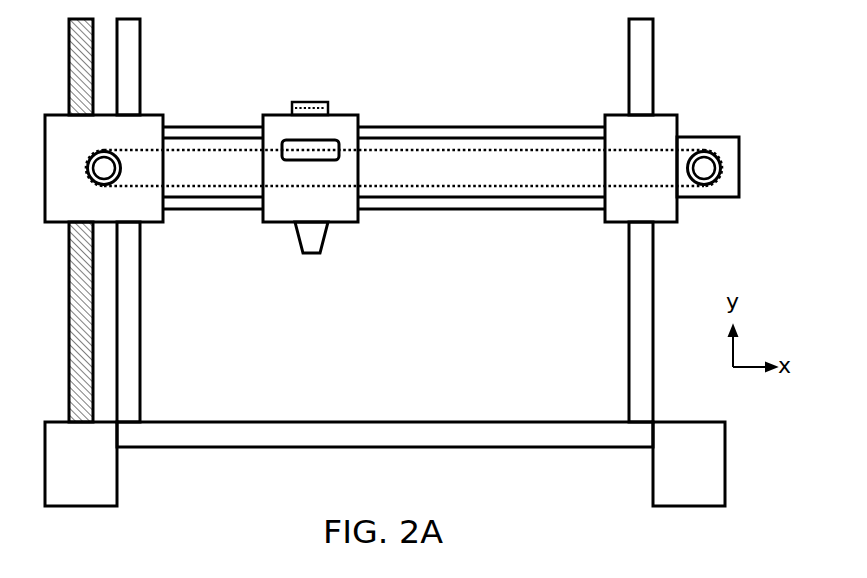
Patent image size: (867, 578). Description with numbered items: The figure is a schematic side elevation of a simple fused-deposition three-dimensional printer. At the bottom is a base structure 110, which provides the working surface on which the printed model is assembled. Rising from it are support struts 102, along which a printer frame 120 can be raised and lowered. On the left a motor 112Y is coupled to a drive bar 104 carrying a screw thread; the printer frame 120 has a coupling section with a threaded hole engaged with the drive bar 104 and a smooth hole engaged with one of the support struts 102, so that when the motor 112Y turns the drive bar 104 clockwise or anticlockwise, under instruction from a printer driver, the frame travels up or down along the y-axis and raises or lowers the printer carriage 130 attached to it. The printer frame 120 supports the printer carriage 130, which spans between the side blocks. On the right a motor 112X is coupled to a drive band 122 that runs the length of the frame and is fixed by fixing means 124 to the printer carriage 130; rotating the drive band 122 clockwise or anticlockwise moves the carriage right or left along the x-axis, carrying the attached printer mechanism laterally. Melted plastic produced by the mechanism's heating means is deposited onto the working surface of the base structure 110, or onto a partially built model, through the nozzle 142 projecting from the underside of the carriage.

The support struts 102 is at (385, 220).
The drive bar 104 is at (53, 220).
The base structure 110 is at (247, 422).
The motor 112X is at (748, 167).
The motor 112Y is at (81, 464).
The printer frame 120 is at (237, 211).
The drive band 122 is at (440, 150).
The fixing means 124 is at (332, 140).
The printer carriage 130 is at (358, 222).
The nozzle 142 is at (317, 253).